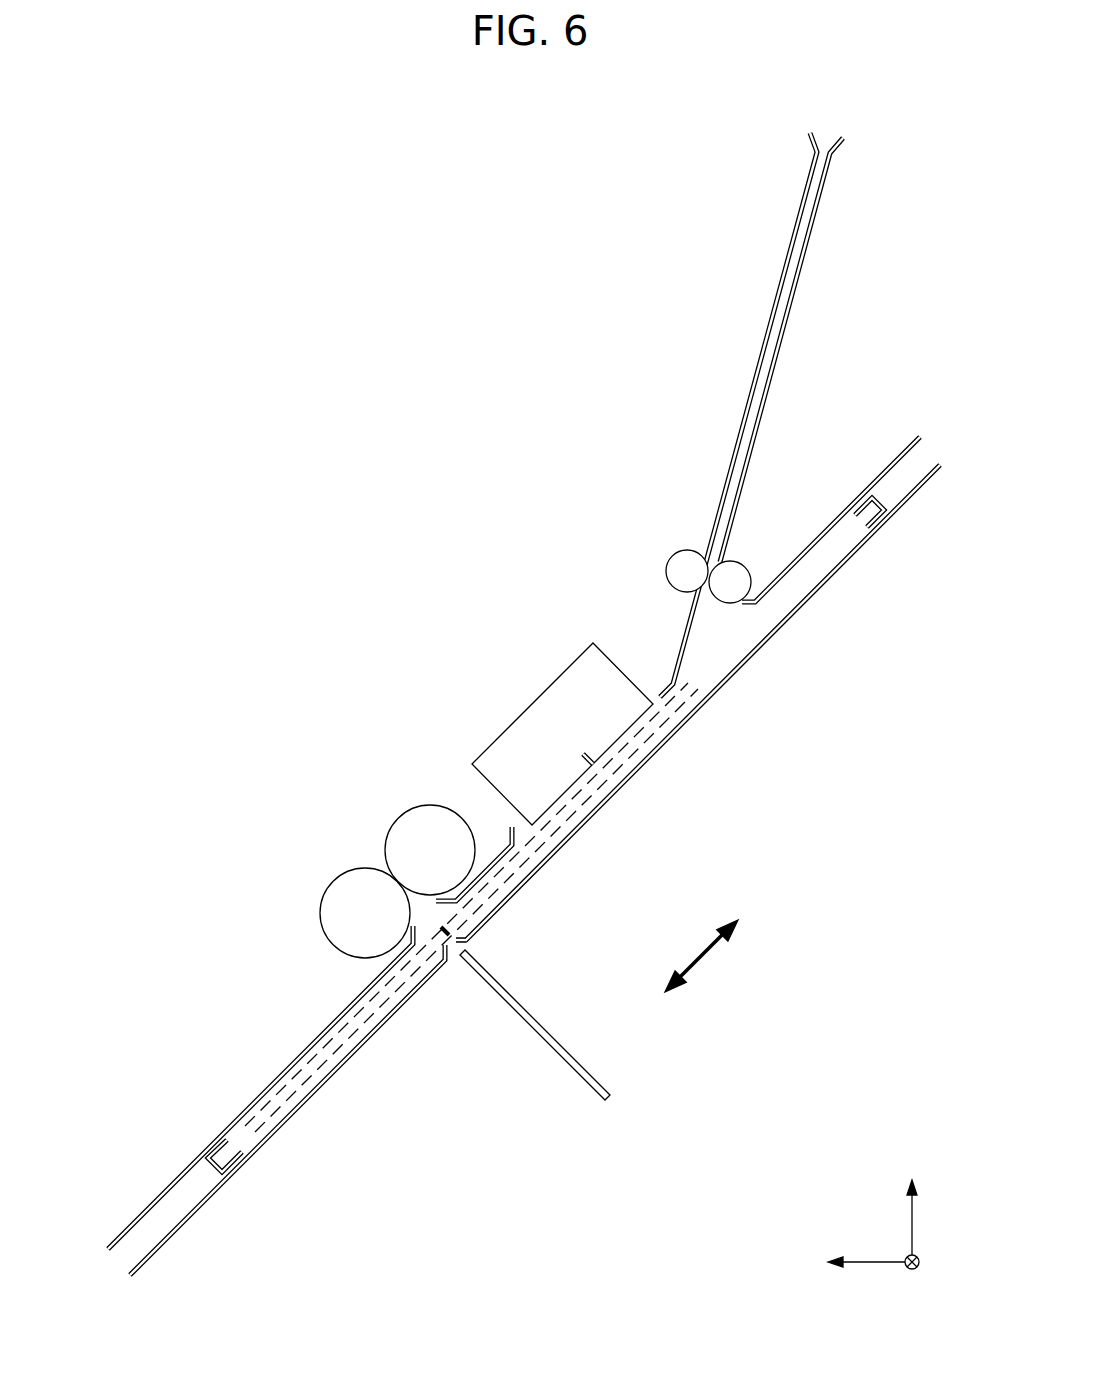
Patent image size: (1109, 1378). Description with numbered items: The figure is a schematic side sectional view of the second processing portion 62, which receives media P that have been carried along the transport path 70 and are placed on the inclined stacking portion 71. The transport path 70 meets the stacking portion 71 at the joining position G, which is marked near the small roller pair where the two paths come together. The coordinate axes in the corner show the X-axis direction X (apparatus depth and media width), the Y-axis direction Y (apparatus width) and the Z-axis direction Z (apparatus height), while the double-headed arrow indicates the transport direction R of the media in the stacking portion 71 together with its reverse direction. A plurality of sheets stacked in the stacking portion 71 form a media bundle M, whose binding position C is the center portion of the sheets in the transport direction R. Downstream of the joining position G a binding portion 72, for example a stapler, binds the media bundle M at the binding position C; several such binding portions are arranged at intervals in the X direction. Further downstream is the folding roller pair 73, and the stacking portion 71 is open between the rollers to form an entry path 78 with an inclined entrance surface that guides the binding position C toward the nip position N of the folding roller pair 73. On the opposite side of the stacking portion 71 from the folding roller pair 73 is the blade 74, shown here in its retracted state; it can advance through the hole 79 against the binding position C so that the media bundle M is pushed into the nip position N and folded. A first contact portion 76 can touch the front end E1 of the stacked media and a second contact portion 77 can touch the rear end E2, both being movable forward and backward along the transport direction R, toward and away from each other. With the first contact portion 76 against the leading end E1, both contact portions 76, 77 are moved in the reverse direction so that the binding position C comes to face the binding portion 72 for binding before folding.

The second processing portion 62 is at (524, 670).
The transport path 70 is at (827, 139).
The stacking portion 71 is at (750, 666).
The binding portion 72 is at (591, 753).
The folding roller pair 73 is at (318, 819).
The blade 74 is at (549, 1048).
The first contact portion 76 is at (500, 885).
The second contact portion 77 is at (876, 523).
The entry path 78 is at (418, 911).
The hole 79 is at (467, 946).
The joining position G is at (725, 617).
The nip position N is at (393, 889).
The media bundle M is at (471, 907).
The media P is at (556, 831).
The binding position C is at (416, 975).
The front end E1 is at (260, 1151).
The rear end E2 is at (698, 717).
The transport direction R is at (698, 961).
The X-axis direction X is at (922, 1262).
The Y-axis direction Y is at (861, 1262).
The Z-axis direction Z is at (912, 1198).